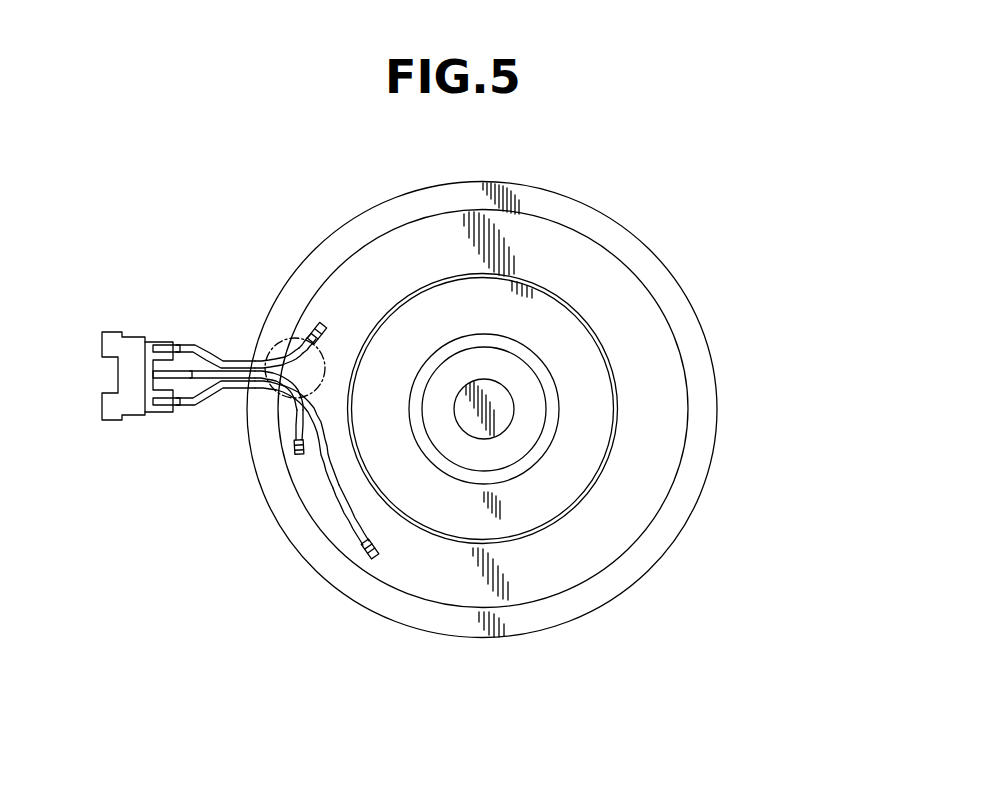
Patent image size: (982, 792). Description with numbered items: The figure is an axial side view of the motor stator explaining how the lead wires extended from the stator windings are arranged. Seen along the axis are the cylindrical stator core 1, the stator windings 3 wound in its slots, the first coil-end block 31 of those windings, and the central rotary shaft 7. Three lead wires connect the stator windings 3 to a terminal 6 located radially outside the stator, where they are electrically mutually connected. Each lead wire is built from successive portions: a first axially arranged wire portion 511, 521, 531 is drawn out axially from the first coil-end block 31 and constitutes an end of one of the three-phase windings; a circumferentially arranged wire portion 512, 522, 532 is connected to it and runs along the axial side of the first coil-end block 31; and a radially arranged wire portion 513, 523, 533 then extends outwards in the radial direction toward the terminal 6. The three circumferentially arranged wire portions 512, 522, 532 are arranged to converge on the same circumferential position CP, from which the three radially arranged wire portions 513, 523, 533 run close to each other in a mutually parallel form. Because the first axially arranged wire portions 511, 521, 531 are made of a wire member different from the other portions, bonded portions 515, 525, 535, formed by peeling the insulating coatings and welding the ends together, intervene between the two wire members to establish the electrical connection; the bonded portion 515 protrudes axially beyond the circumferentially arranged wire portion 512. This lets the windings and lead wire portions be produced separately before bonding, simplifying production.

The stator core 1 is at (670, 268).
The stator windings 3 is at (686, 354).
The first coil-end block 31 is at (672, 408).
The rotary shaft 7 is at (498, 418).
The terminal 6 is at (135, 343).
The circumferential position CP is at (325, 380).
The first axially arranged wire portion 511 is at (317, 322).
The circumferentially arranged wire portion 512 is at (313, 346).
The radially arranged wire portion 513 is at (248, 357).
The bonded portion 515 is at (333, 330).
The first axially arranged wire portion 521 is at (372, 558).
The circumferentially arranged wire portion 522 is at (337, 503).
The radially arranged wire portion 523 is at (218, 363).
The bonded portion 525 is at (373, 542).
The first axially arranged wire portion 531 is at (280, 412).
The circumferentially arranged wire portion 532 is at (288, 420).
The radially arranged wire portion 533 is at (218, 390).
The bonded portion 535 is at (304, 442).